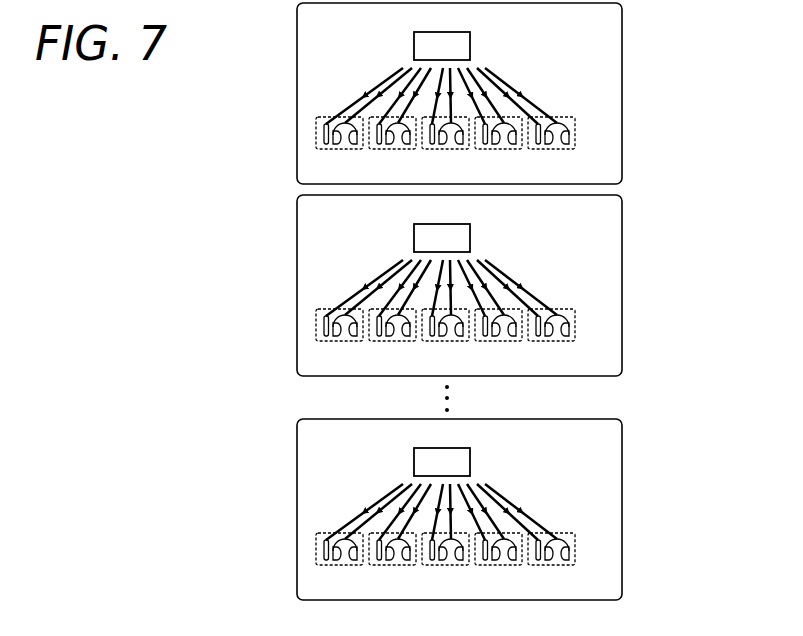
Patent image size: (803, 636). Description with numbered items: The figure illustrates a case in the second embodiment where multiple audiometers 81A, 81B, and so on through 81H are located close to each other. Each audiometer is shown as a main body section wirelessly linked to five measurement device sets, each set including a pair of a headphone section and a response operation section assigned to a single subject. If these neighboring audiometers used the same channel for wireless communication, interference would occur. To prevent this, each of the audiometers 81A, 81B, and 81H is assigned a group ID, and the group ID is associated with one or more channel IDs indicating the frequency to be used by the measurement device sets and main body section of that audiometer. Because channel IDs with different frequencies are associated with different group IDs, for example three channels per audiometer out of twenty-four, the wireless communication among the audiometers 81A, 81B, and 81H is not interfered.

The audiometer 81A is at (622, 33).
The audiometer 81B is at (495, 285).
The audiometer 81H is at (495, 509).